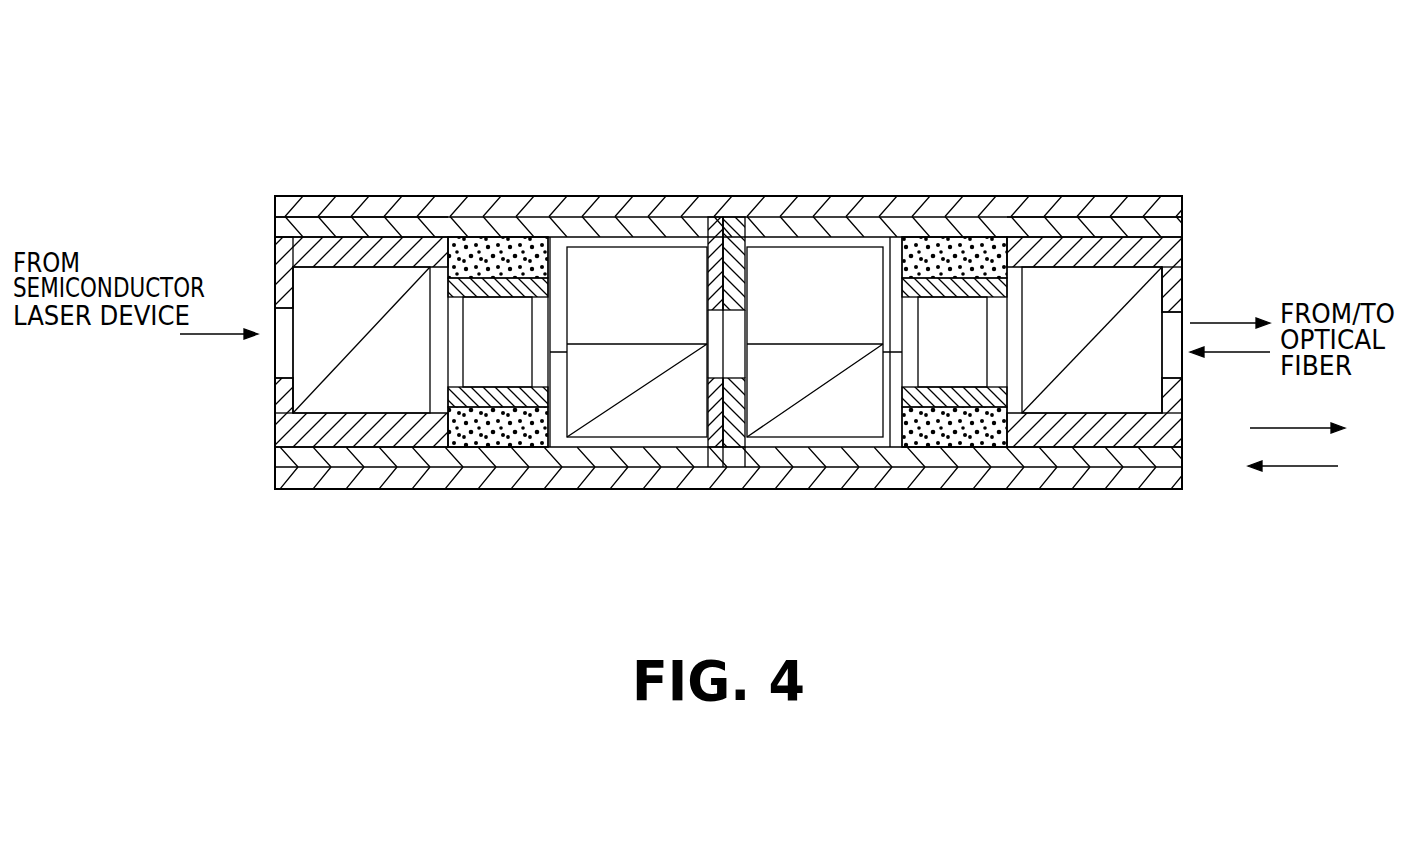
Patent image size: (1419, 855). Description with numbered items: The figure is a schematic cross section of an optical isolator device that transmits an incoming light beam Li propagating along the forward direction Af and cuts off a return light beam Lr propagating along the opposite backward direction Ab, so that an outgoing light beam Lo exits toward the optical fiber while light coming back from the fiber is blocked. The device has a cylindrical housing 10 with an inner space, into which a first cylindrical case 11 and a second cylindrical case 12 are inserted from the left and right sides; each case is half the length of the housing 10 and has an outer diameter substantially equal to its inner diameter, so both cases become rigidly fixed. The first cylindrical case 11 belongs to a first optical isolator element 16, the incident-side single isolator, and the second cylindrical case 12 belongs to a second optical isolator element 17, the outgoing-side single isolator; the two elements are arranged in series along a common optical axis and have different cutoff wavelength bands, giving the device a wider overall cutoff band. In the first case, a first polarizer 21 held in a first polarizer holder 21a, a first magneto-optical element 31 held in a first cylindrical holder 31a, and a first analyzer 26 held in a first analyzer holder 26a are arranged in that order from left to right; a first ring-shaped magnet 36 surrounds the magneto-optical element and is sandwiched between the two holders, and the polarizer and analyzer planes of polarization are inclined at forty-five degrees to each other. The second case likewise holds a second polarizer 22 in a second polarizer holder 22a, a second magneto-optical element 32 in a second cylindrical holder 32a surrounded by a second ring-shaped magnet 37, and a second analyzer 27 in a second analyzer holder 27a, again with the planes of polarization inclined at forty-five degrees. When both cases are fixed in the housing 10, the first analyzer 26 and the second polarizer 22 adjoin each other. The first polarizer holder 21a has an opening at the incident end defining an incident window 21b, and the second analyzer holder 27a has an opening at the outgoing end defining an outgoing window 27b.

The housing 10 is at (610, 205).
The first cylindrical case 11 is at (415, 228).
The second cylindrical case 12 is at (950, 228).
The first optical isolator element 16 is at (350, 214).
The second optical isolator element 17 is at (1065, 214).
The first polarizer 21 is at (335, 400).
The first polarizer holder 21a is at (298, 200).
The incident window 21b is at (277, 372).
The second polarizer 22 is at (828, 408).
The second polarizer holder 22a is at (737, 445).
The first analyzer 26 is at (657, 290).
The first analyzer holder 26a is at (715, 443).
The second analyzer 27 is at (1110, 400).
The second analyzer holder 27a is at (1187, 248).
The outgoing window 27b is at (1183, 373).
The first magneto-optical element 31 is at (490, 370).
The first cylindrical holder 31a is at (478, 290).
The second magneto-optical element 32 is at (957, 370).
The second cylindrical holder 32a is at (921, 248).
The first ring-shaped magnet 36 is at (538, 252).
The second ring-shaped magnet 37 is at (986, 248).
The incoming light beam Li is at (212, 338).
The outgoing light beam Lo is at (1232, 320).
The return light beam Lr is at (1232, 358).
The forward direction Af is at (1303, 428).
The backward direction Ab is at (1313, 470).